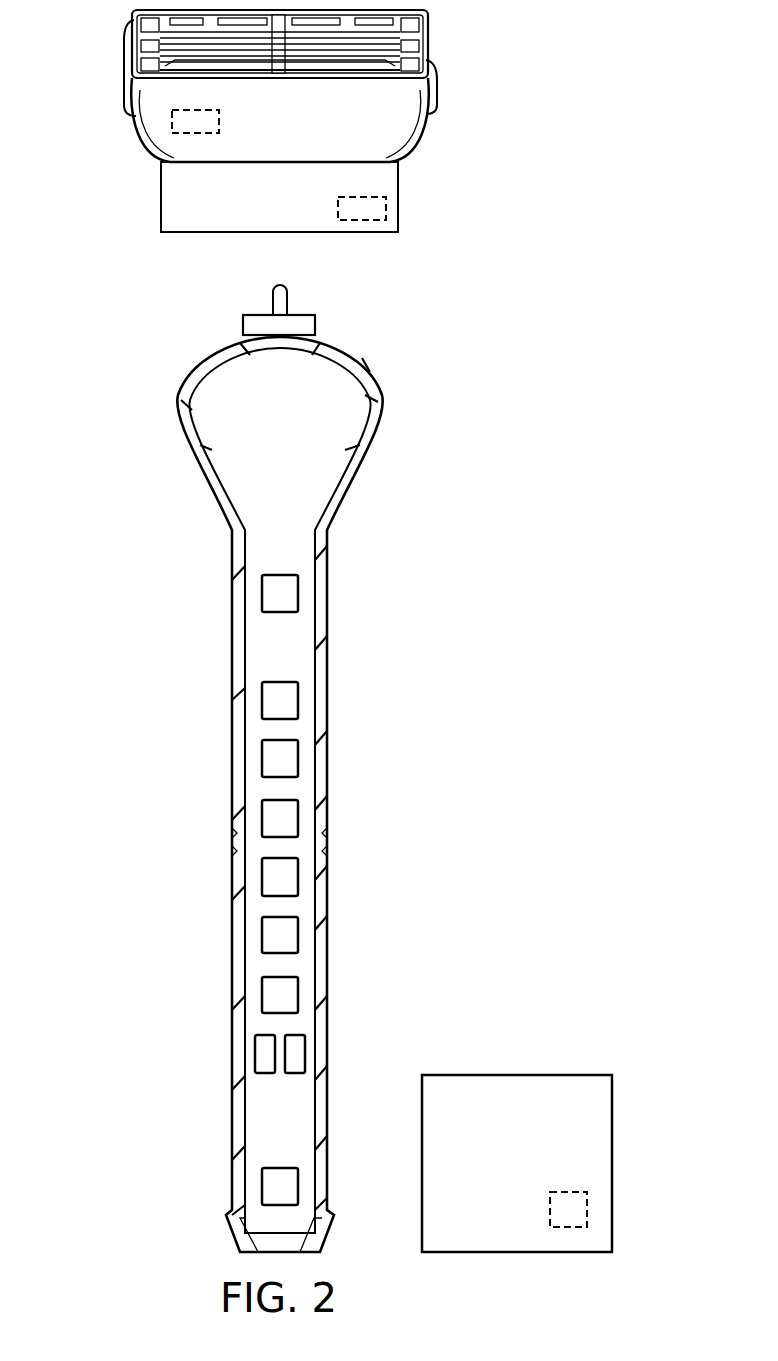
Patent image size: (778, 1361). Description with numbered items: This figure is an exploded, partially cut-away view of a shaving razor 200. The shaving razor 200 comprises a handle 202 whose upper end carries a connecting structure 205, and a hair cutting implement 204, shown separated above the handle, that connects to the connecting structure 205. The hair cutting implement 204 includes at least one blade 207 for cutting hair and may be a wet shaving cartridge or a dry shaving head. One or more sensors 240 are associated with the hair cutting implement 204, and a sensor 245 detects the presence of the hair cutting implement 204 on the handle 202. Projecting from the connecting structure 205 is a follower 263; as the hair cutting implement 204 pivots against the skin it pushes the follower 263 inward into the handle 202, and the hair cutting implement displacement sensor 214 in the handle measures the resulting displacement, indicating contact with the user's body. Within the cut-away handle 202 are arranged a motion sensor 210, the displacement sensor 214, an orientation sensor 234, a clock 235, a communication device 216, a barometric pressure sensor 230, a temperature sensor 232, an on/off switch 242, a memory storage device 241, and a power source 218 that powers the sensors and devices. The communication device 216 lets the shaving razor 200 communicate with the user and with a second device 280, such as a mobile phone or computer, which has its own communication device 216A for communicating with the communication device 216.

The shaving razor 200 is at (470, 408).
The handle 202 is at (327, 647).
The hair cutting implement 204 is at (116, 98).
The connecting structure 205 is at (252, 325).
The blade 207 is at (195, 62).
The motion sensor 210 is at (262, 698).
The hair cutting implement displacement sensor 214 is at (262, 592).
The communication device 216 is at (262, 877).
The communication device 216A is at (567, 1228).
The power source 218 is at (262, 1187).
The barometric pressure sensor 230 is at (262, 935).
The temperature sensor 232 is at (262, 993).
The orientation sensor 234 is at (298, 757).
The clock 235 is at (298, 815).
The sensor 240 is at (219, 122).
The memory storage device 241 is at (305, 1055).
The on/off switch 242 is at (255, 1055).
The sensor 245 is at (386, 207).
The follower 263 is at (288, 300).
The second device 280 is at (613, 1162).